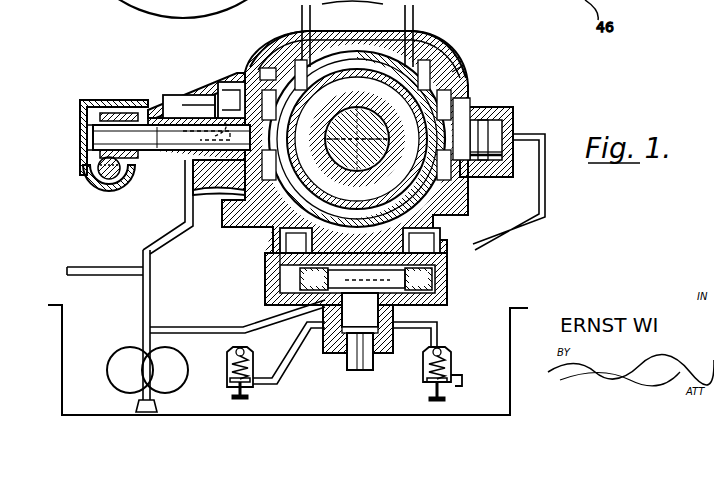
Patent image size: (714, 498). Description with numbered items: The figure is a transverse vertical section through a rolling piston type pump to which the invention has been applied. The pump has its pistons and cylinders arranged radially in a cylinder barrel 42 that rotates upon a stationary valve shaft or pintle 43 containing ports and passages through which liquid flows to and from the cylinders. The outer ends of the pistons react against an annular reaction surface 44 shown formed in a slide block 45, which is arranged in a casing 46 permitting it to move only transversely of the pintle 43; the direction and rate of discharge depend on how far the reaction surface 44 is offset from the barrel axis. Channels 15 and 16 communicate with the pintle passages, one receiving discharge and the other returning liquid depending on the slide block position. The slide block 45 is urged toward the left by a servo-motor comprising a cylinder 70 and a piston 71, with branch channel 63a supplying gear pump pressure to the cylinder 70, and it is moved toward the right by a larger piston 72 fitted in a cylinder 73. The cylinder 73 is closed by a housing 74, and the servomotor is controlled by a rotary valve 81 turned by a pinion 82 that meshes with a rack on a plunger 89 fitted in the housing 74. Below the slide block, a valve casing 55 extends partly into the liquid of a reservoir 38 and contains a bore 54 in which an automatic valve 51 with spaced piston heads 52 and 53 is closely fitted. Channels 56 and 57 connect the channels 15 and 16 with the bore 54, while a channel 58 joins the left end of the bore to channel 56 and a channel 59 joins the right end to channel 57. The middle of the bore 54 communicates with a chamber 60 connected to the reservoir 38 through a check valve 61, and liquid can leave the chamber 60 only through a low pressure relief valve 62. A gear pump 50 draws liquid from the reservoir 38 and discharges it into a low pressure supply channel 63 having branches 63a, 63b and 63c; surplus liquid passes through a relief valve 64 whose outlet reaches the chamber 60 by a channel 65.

The channel 15 is at (302, 18).
The channel 16 is at (413, 20).
The annular reaction surface 44 is at (400, 31).
The casing 46 is at (445, 48).
The slide block 45 is at (452, 72).
The cylinder barrel 42 is at (357, 139).
The valve shaft or pintle 43 is at (357, 139).
The channel 56 is at (312, 246).
The channel 57 is at (403, 246).
The housing 74 is at (165, 112).
The cylinder 73 is at (217, 103).
The piston 72 is at (228, 90).
The rotary valve 81 is at (171, 136).
The pinion 82 is at (106, 115).
The piston or plunger 89 is at (83, 166).
The piston 71 is at (482, 120).
The cylinder 70 is at (515, 122).
The bore 54 is at (268, 287).
The channel 58 is at (268, 261).
The channel 59 is at (450, 265).
The valve casing 55 is at (450, 296).
The piston head 52 is at (314, 279).
The piston head 53 is at (418, 279).
The automatic valve 51 is at (366, 279).
The chamber 60 is at (358, 323).
The check valve 61 is at (360, 355).
The reservoir 38 is at (490, 403).
The gear pump 50 is at (122, 358).
The low pressure supply channel 63 is at (143, 297).
The branch channel 63a is at (197, 327).
The branch channel 63b is at (176, 233).
The branch channel 63c is at (108, 267).
The channel 65 is at (290, 365).
The relief valve 64 is at (226, 370).
The low pressure relief valve 62 is at (441, 349).